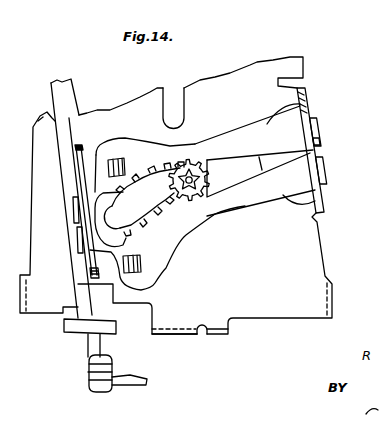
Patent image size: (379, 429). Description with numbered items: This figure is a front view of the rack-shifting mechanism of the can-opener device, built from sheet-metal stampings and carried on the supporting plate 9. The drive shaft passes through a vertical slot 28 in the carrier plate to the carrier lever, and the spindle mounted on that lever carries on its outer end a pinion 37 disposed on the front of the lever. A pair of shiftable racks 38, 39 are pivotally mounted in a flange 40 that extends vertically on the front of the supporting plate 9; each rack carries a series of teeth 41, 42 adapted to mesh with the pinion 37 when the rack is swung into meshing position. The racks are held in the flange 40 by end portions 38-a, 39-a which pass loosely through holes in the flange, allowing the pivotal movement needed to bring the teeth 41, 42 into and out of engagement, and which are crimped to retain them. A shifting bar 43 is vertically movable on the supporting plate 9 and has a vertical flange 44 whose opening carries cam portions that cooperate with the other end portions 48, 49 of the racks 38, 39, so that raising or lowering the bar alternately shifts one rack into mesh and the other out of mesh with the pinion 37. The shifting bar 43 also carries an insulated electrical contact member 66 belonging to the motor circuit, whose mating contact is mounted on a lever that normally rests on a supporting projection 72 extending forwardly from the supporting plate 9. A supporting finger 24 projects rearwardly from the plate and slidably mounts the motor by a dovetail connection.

The supporting plate 9 is at (263, 313).
The supporting finger 24 is at (176, 336).
The vertical slot 28 is at (186, 105).
The pinion 37 is at (200, 191).
The shiftable rack 38 is at (268, 152).
The end portion 38-a is at (314, 135).
The shiftable rack 39 is at (273, 197).
The end portion 39-a is at (324, 175).
The flange 40 is at (305, 115).
The teeth 41 is at (141, 167).
The teeth 42 is at (166, 207).
The shifting bar 43 is at (67, 97).
The vertical flange 44 is at (82, 146).
The end portion 48 is at (74, 211).
The end portion 49 is at (77, 248).
The electrical contact member 66 is at (88, 367).
The supporting projection 72 is at (210, 336).